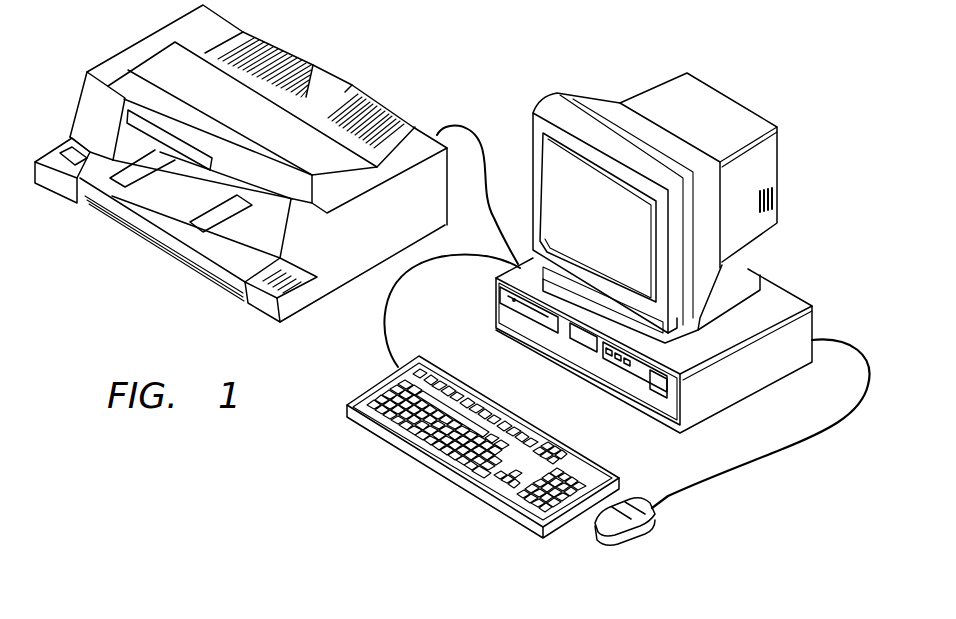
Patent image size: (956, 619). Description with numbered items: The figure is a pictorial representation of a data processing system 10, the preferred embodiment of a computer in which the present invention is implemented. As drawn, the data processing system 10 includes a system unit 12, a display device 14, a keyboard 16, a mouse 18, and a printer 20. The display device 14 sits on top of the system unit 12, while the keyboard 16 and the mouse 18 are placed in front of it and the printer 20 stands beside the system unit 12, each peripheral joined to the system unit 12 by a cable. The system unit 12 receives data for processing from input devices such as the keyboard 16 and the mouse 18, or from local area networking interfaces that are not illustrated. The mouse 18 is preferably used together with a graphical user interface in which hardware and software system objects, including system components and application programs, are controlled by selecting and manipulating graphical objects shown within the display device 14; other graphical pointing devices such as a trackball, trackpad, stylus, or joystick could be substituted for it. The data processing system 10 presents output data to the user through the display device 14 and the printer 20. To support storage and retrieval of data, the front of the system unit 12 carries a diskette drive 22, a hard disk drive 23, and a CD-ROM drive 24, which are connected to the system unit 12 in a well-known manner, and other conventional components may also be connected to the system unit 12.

The data processing system 10 is at (452, 63).
The system unit 12 is at (657, 334).
The display device 14 is at (724, 87).
The keyboard 16 is at (339, 412).
The mouse 18 is at (603, 536).
The printer 20 is at (145, 281).
The diskette drive 22 is at (620, 362).
The hard disk drive 23 is at (580, 343).
The CD-ROM drive 24 is at (542, 318).